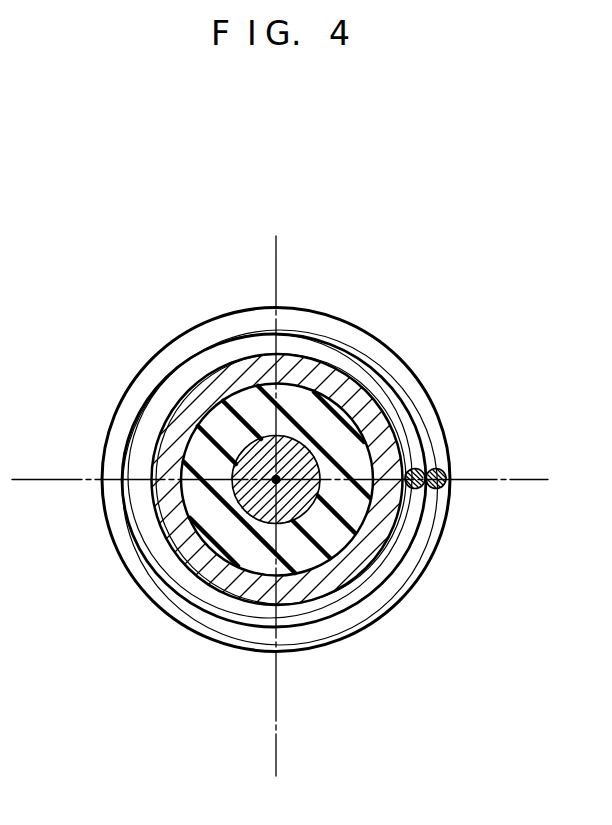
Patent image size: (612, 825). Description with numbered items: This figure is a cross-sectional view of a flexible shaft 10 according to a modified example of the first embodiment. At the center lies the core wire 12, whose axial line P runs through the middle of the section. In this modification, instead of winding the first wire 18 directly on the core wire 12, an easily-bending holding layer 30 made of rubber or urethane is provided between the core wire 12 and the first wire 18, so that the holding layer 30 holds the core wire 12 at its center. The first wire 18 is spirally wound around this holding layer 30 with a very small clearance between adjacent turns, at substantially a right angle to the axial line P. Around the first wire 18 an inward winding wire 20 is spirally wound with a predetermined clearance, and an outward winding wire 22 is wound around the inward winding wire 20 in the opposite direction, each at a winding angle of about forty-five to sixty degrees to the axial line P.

The flexible shaft 10 is at (330, 276).
The core wire 12 is at (276, 480).
The first wire 18 is at (420, 384).
The inward winding wire 20 is at (416, 469).
The outward winding wire 22 is at (439, 469).
The holding layer 30 is at (337, 542).
The axial line P is at (278, 477).